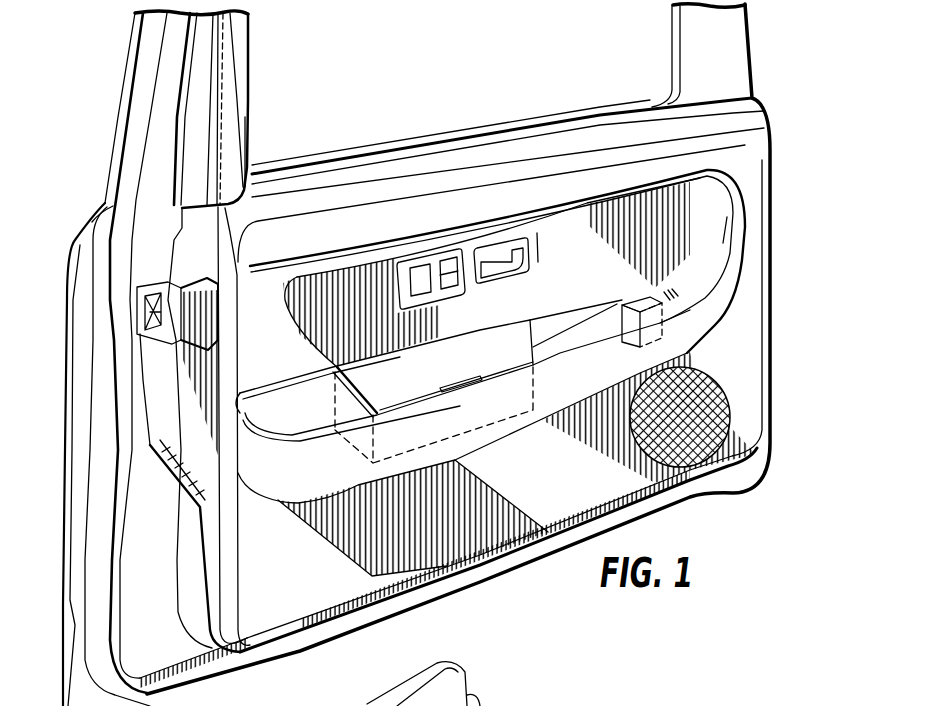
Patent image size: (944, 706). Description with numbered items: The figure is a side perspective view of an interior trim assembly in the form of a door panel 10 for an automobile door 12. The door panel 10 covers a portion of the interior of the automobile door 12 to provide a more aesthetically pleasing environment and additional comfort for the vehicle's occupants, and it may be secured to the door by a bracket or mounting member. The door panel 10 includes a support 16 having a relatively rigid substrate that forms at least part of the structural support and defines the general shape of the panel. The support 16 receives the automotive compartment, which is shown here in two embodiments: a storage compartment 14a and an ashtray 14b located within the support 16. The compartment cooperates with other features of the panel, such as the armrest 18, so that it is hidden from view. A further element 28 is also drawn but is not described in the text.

The door panel 10 is at (806, 118).
The automobile door 12 is at (342, 160).
The storage compartment 14a is at (470, 428).
The ashtray 14b is at (687, 353).
The support 16 is at (730, 247).
The armrest 18 is at (460, 347).
The carrier plate 28 is at (451, 684).